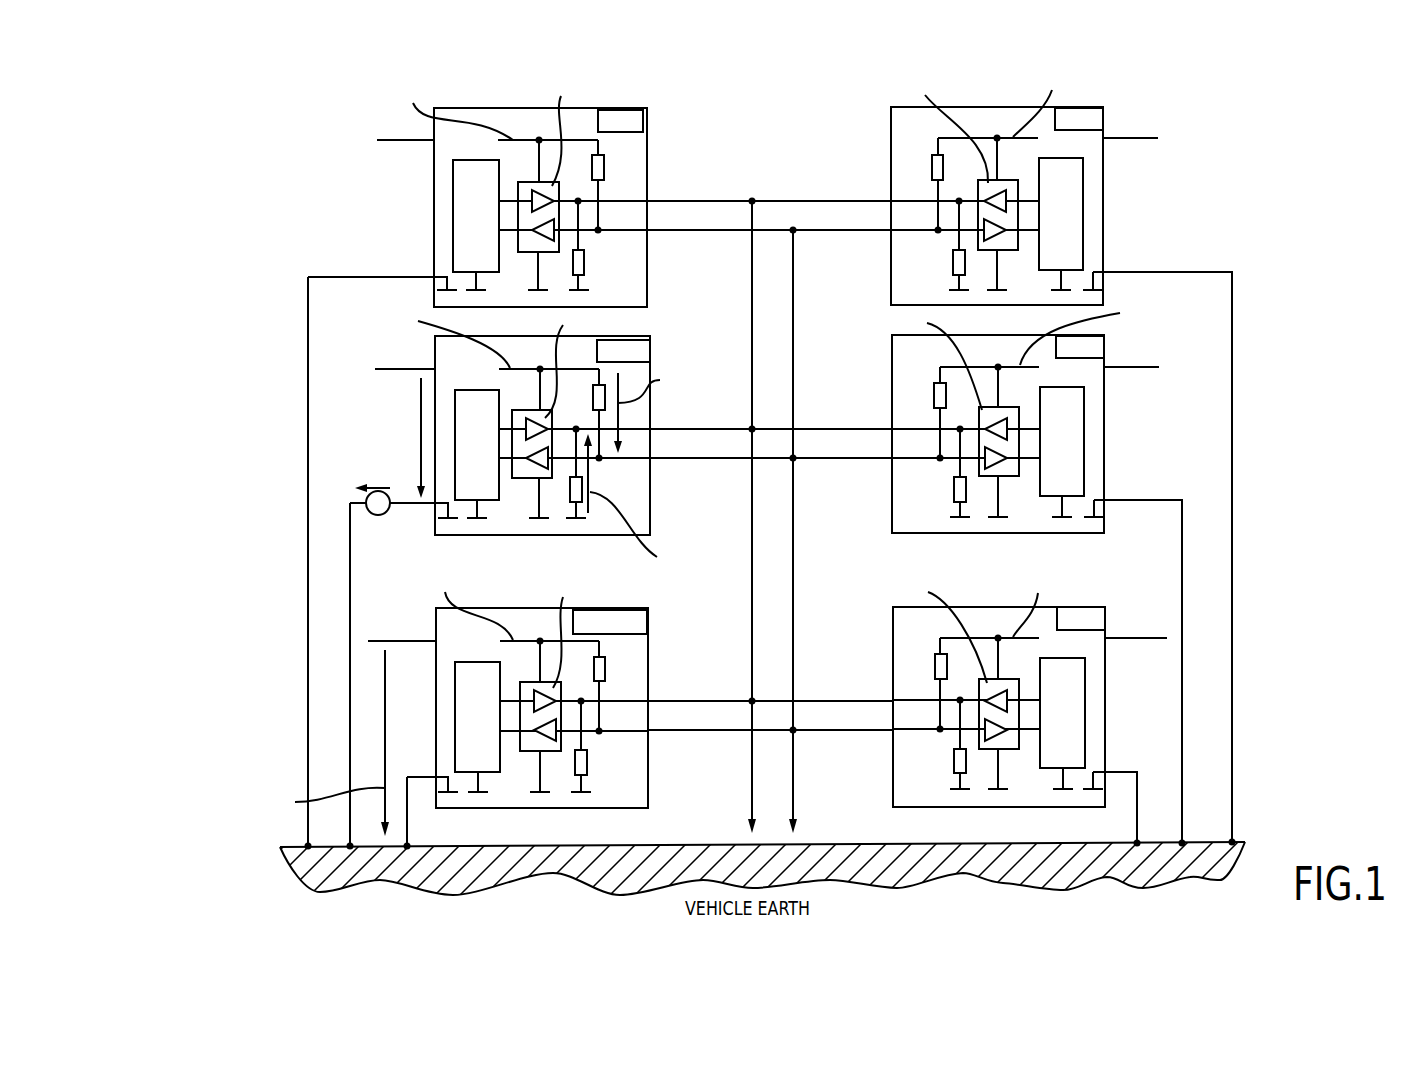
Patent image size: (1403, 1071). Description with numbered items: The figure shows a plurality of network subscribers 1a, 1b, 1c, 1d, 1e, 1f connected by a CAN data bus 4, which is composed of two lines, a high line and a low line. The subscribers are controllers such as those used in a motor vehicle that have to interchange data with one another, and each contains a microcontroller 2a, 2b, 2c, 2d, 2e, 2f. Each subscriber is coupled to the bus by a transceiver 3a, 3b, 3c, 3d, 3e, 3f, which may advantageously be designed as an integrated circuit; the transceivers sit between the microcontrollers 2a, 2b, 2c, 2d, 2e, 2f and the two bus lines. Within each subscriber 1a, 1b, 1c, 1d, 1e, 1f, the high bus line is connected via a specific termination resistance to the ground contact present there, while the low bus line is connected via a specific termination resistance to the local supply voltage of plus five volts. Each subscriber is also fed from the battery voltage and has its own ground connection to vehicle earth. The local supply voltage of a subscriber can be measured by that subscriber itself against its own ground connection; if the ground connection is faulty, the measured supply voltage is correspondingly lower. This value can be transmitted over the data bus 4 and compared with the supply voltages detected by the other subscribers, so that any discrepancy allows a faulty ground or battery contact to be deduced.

The network subscriber 1a is at (647, 143).
The network subscriber 1b is at (650, 509).
The network subscriber 1c is at (648, 773).
The network subscriber 1d is at (891, 140).
The network subscriber 1e is at (892, 370).
The network subscriber 1f is at (893, 640).
The microcontroller 2a is at (460, 186).
The microcontroller 2b is at (463, 403).
The microcontroller 2c is at (460, 683).
The microcontroller 2d is at (1062, 205).
The microcontroller 2e is at (1055, 423).
The microcontroller 2f is at (1067, 710).
The transceiver 3a is at (522, 251).
The transceiver 3b is at (517, 473).
The transceiver 3c is at (527, 748).
The transceiver 3d is at (1015, 250).
The transceiver 3e is at (1013, 467).
The transceiver 3f is at (1008, 740).
The data bus 4 is at (732, 314).